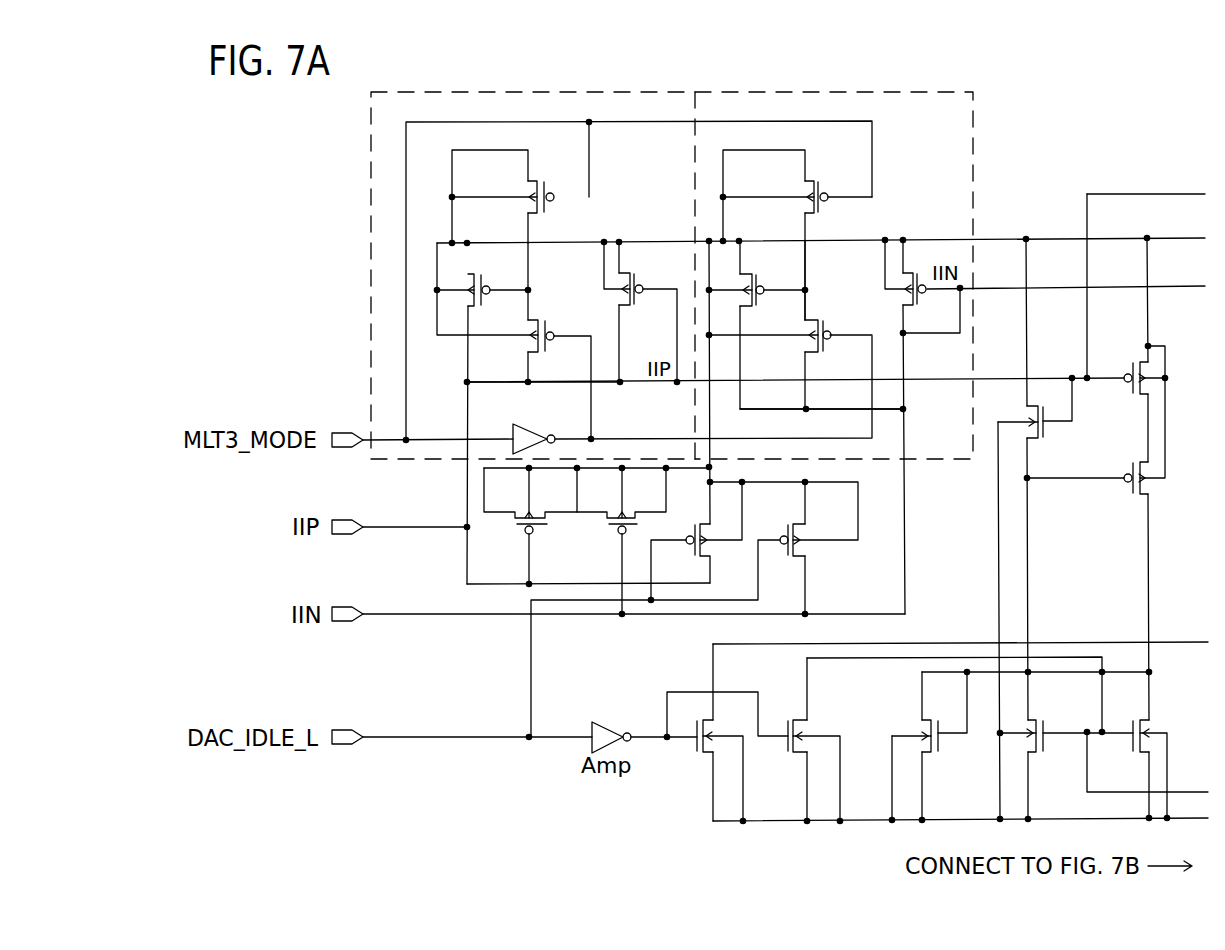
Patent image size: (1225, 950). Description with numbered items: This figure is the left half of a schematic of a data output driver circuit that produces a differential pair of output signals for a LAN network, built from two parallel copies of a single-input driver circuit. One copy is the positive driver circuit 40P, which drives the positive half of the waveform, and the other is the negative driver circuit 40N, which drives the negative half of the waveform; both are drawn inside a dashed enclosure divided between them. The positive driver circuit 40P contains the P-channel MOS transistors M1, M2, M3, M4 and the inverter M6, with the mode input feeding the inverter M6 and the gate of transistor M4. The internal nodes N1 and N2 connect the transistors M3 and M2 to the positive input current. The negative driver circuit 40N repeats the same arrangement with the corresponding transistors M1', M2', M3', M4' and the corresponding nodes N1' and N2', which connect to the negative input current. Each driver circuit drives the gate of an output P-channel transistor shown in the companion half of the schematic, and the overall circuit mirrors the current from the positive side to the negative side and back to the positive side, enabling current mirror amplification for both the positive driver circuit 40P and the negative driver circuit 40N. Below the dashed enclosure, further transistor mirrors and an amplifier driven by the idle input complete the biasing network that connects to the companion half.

The positive driver circuit 40P is at (630, 101).
The negative driver circuit 40N is at (958, 119).
The P-channel MOS transistor M1 is at (641, 307).
The P-channel MOS transistor M2 is at (559, 349).
The P-channel MOS transistor M3 is at (489, 275).
The P-channel MOS transistor M4 is at (551, 177).
The inverter M6 is at (533, 431).
The node N1 is at (538, 281).
The node N2 is at (543, 398).
The transistor M1' is at (932, 304).
The transistor M2' is at (835, 349).
The transistor M3' is at (767, 275).
The transistor M4' is at (834, 177).
The node N1' is at (839, 280).
The node N2' is at (821, 423).